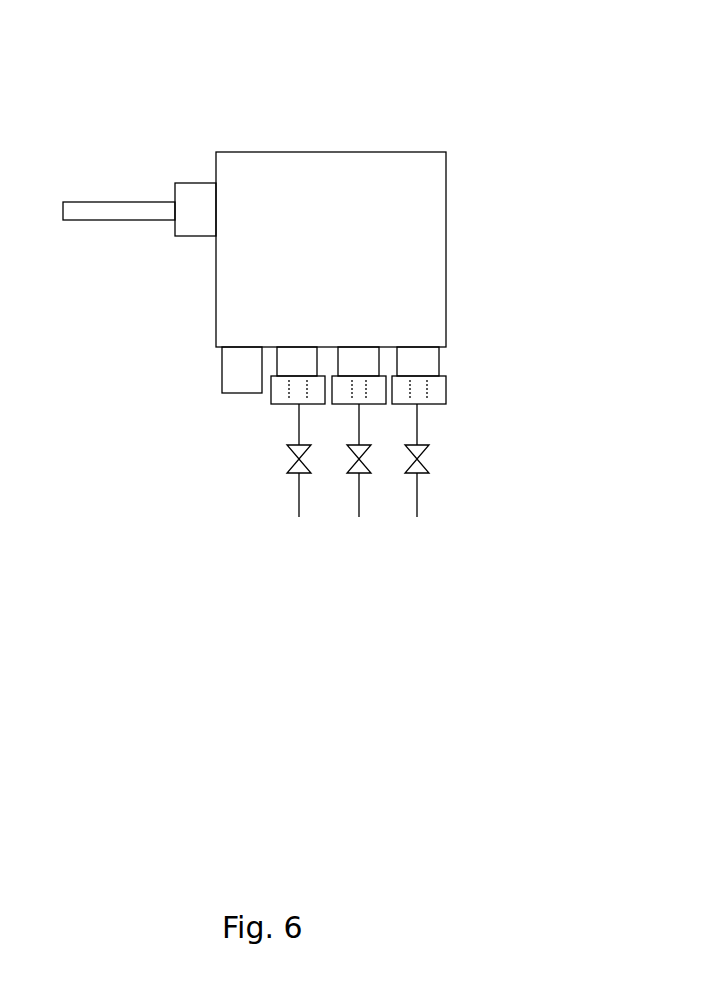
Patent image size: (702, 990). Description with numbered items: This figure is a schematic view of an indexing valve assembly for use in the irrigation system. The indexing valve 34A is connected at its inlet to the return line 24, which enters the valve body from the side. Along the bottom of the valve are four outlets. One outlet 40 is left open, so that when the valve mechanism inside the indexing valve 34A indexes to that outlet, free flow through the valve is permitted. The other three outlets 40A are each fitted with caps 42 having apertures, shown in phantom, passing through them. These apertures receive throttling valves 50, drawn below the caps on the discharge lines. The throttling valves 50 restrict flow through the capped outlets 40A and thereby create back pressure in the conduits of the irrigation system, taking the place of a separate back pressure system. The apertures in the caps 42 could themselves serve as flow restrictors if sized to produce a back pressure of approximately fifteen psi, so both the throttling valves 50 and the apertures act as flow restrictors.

The indexing valve 34A is at (421, 108).
The return line 24 is at (126, 213).
The outlet 40 is at (237, 373).
The outlets 40A is at (417, 366).
The caps 42 is at (442, 393).
The throttling valves 50 is at (293, 470).